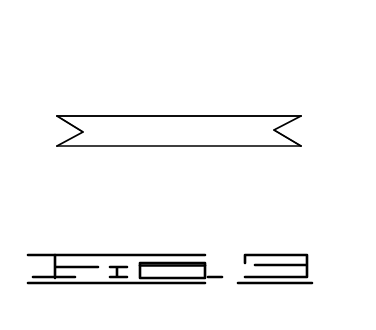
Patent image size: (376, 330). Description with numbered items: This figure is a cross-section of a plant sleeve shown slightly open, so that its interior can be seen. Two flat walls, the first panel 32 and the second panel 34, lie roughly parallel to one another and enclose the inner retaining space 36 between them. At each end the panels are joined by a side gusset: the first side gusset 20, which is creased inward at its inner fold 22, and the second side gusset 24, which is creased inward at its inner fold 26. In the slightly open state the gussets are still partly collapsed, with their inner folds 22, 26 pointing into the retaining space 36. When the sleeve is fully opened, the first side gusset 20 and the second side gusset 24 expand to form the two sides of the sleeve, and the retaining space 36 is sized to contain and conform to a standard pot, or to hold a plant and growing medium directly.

The first side gusset 20 is at (72, 126).
The inner fold 22 is at (92, 117).
The second side gusset 24 is at (287, 124).
The inner fold 26 is at (274, 131).
The first panel 32 is at (197, 147).
The second panel 34 is at (179, 116).
The inner retaining space 36 is at (123, 132).